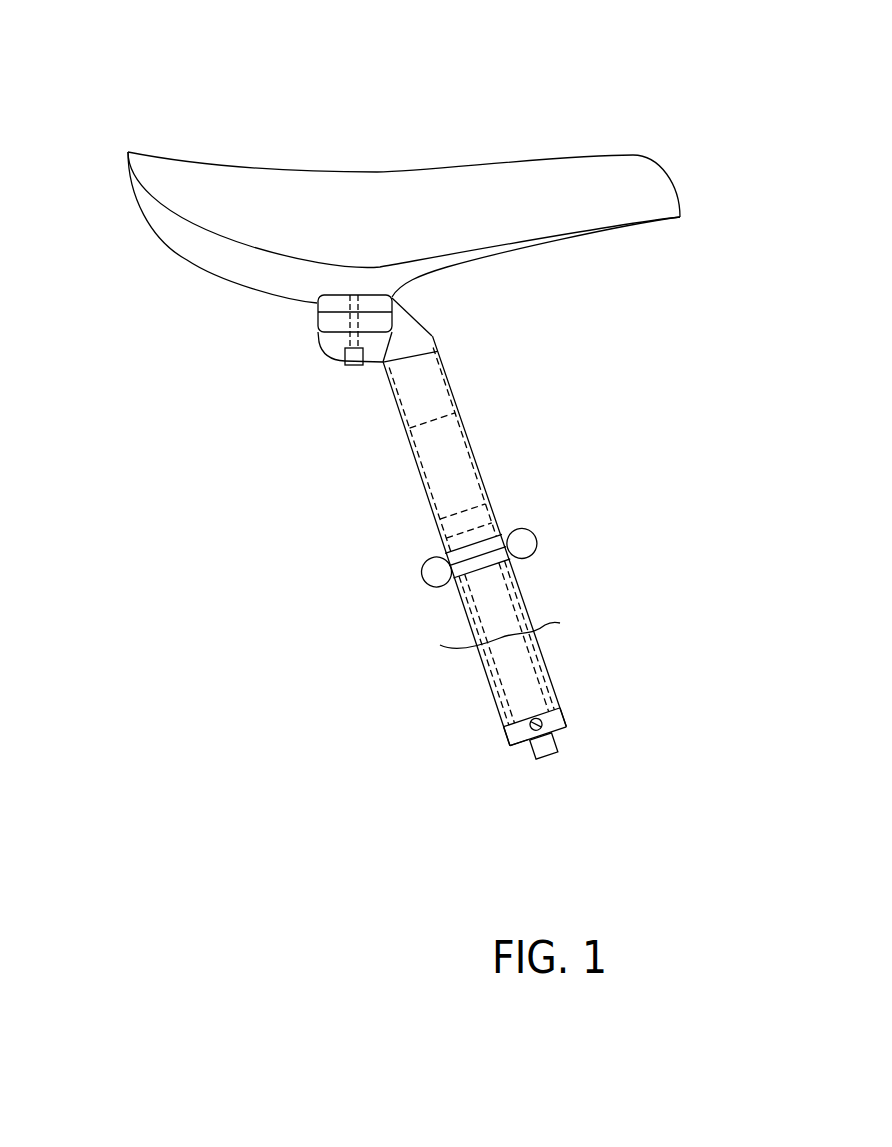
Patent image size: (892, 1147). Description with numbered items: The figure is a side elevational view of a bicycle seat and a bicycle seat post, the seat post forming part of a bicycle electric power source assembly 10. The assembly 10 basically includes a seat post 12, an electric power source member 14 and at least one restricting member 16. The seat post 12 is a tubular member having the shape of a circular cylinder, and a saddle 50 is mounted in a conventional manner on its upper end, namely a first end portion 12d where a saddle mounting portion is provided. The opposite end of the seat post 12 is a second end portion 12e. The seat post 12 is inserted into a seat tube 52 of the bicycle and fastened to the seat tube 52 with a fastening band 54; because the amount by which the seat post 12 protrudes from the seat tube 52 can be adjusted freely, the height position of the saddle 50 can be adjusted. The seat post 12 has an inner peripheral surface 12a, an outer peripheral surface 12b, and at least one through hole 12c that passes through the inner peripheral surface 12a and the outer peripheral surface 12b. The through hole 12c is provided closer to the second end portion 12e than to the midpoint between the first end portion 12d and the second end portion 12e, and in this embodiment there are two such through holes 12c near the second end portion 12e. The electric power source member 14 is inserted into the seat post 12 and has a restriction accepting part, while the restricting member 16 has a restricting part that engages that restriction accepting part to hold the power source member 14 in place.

The bicycle electric power source assembly 10 is at (512, 494).
The seat post 12 is at (500, 580).
The inner peripheral surface 12a is at (560, 702).
The outer peripheral surface 12b is at (507, 738).
The through hole 12c is at (507, 727).
The first end portion 12d is at (420, 363).
The second end portion 12e is at (555, 740).
The electric power source member 14 is at (529, 724).
The restricting member 16 is at (533, 757).
The saddle 50 is at (378, 170).
The seat tube 52 is at (536, 604).
The fastening band 54 is at (535, 541).